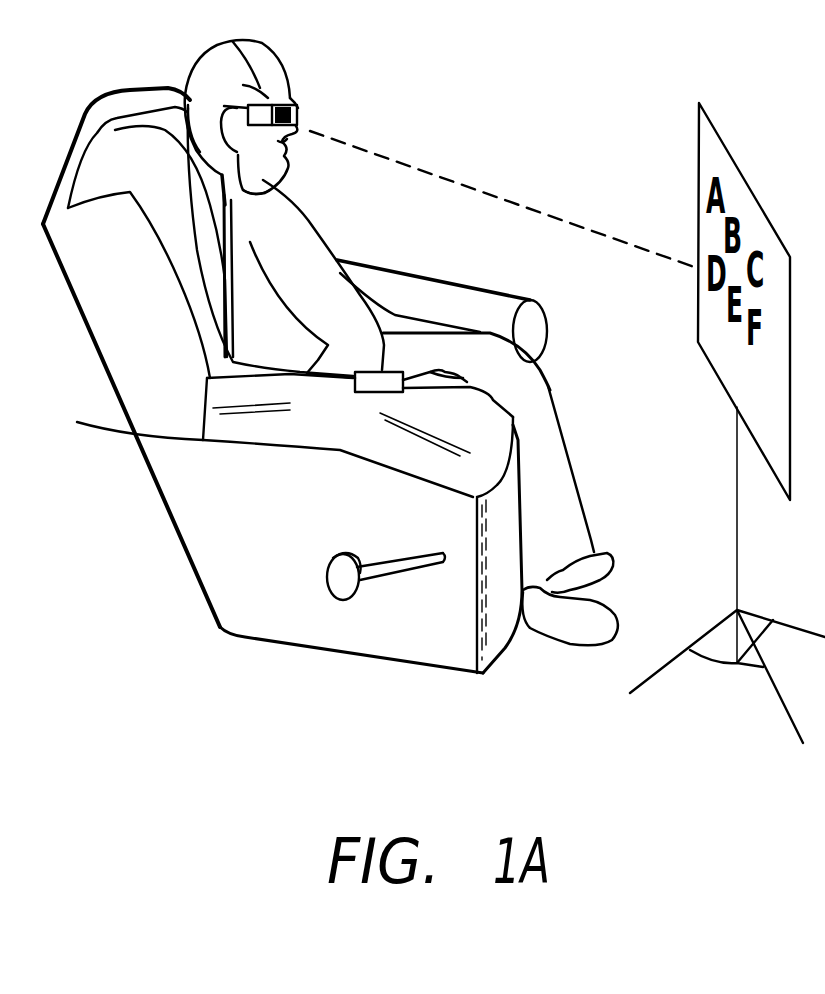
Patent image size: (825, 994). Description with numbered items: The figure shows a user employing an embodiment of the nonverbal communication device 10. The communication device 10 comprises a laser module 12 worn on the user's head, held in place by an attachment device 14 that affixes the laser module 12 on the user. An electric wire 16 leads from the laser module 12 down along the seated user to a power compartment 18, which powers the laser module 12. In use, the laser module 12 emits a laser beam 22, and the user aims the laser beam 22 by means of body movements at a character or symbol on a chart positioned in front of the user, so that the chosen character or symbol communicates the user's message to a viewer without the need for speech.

The communication device 10 is at (204, 128).
The laser module 12 is at (259, 92).
The attachment device 14 is at (294, 102).
The electric wire 16 is at (229, 233).
The power compartment 18 is at (346, 391).
The laser beam 22 is at (462, 178).